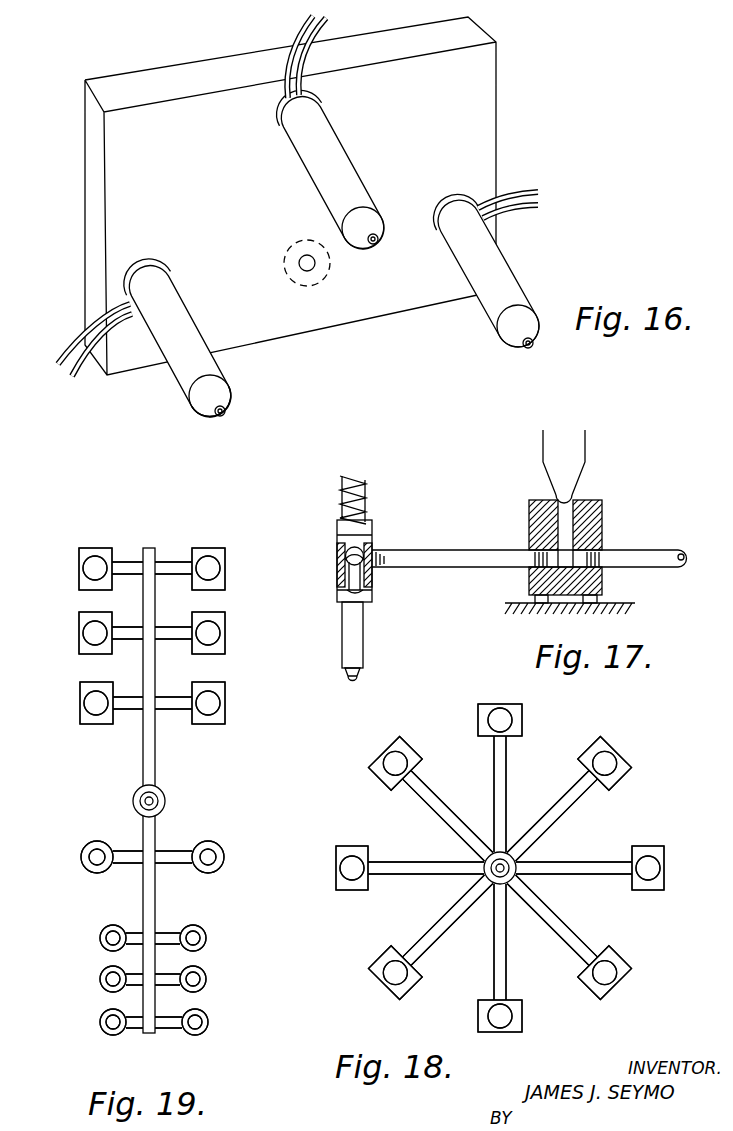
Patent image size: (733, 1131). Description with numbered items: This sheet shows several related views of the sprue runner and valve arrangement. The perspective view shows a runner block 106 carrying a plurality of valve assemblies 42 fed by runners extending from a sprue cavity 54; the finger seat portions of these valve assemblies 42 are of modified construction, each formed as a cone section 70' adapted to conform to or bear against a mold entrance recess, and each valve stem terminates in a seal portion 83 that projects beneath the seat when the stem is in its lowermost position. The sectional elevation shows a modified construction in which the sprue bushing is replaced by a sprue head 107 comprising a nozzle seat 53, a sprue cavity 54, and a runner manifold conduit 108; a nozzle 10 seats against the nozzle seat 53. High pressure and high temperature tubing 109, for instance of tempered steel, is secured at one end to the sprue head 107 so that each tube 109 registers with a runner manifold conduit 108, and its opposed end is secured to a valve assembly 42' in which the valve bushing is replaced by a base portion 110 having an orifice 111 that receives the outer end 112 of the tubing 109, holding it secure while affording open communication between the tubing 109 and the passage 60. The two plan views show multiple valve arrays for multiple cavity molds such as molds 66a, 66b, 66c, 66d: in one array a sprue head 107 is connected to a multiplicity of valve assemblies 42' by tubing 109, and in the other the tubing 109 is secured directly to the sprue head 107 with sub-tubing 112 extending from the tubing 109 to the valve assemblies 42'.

In FIG. 16, the runner block 106 is at (90, 201).
In FIG. 16, the valve assembly 42 is at (311, 217).
In FIG. 16, the sprue cavity 54 is at (314, 270).
In FIG. 17, the sprue cavity 54 is at (562, 528).
In FIG. 16, the cone section 70' is at (231, 400).
In FIG. 16, the seal portion 83 is at (524, 347).
In FIG. 17, the pin 10 is at (575, 492).
In FIG. 17, the nozzle seat 53 is at (553, 492).
In FIG. 17, the passage 60 is at (337, 567).
In FIG. 17, the sprue head 107 is at (545, 573).
In FIG. 19, the sprue head 107 is at (166, 801).
In FIG. 18, the sprue head 107 is at (484, 866).
In FIG. 17, the runner manifold conduit 108 is at (572, 564).
In FIG. 17, the tubing 109 is at (437, 561).
In FIG. 19, the tubing 109 is at (143, 742).
In FIG. 18, the tubing 109 is at (422, 791).
In FIG. 17, the base portion 110 is at (340, 557).
In FIG. 17, the orifice 111 is at (372, 550).
In FIG. 17, the outer end of tubing 112 is at (376, 566).
In FIG. 19, the outer end of tubing 112 is at (117, 562).
In FIG. 17, the valve assembly 42' is at (327, 621).
In FIG. 19, the valve assembly 42' is at (149, 775).
In FIG. 18, the valve assembly 42' is at (525, 869).
In FIG. 18, the mold 66a is at (588, 752).
In FIG. 19, the mold 66b is at (220, 691).
In FIG. 19, the mold 66c is at (223, 858).
In FIG. 19, the mold 66d is at (210, 981).